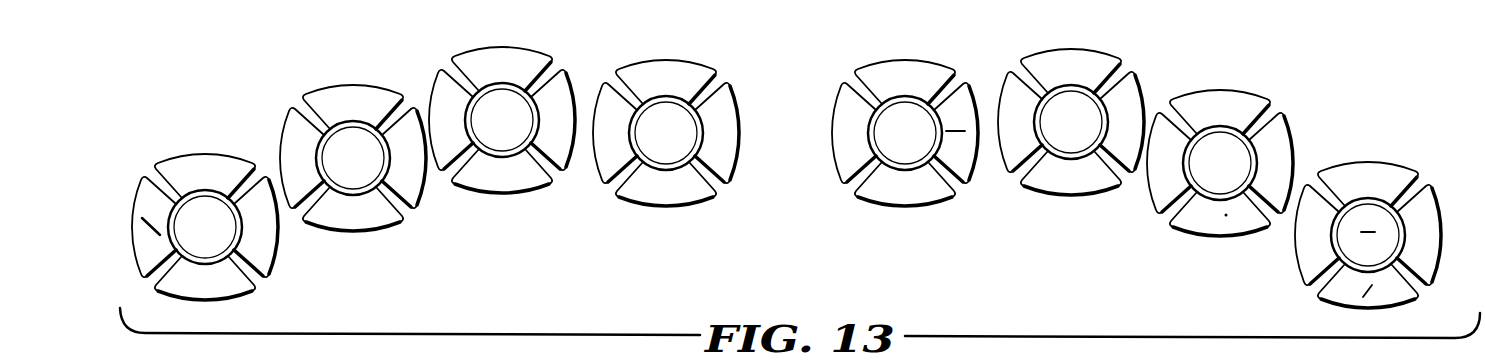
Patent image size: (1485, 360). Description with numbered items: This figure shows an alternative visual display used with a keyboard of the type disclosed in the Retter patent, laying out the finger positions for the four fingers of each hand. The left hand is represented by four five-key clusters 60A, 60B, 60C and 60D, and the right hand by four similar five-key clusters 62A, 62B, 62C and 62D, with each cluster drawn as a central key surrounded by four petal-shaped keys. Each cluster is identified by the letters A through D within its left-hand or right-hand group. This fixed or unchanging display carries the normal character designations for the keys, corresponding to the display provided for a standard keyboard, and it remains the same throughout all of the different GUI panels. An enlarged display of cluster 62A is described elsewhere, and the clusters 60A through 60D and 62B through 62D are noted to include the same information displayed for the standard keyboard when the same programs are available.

The five-key cluster 60A is at (213, 146).
The five-key cluster 60B is at (338, 84).
The five-key cluster 60C is at (503, 42).
The five-key cluster 60D is at (672, 47).
The five-key cluster 62A is at (917, 48).
The five-key cluster 62B is at (1110, 45).
The five-key cluster 62C is at (1255, 85).
The five-key cluster 62D is at (1378, 152).